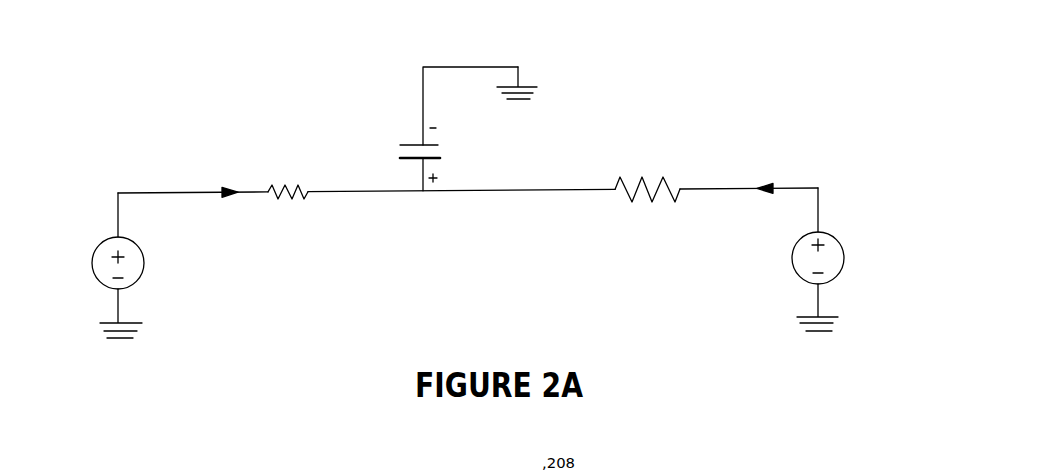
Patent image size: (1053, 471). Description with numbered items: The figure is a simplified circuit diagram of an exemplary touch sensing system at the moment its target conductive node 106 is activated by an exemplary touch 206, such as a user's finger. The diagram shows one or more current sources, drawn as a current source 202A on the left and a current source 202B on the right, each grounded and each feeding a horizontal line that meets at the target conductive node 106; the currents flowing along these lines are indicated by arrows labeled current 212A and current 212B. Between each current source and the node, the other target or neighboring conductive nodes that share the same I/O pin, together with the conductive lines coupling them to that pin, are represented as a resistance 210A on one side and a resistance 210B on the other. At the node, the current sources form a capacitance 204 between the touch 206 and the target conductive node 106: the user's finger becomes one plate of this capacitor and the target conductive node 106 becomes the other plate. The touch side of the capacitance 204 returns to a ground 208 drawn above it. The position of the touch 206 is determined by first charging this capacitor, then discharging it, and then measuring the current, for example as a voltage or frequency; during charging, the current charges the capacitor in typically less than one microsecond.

The current 212A is at (137, 192).
The current source 202A is at (144, 262).
The resistance 210A is at (307, 217).
The target conductive node 106 is at (429, 192).
The touch 206 is at (423, 113).
The capacitance 204 is at (427, 144).
The ground 208 is at (520, 82).
The resistance 210B is at (678, 226).
The current 212B is at (817, 163).
The current source 202B is at (843, 255).